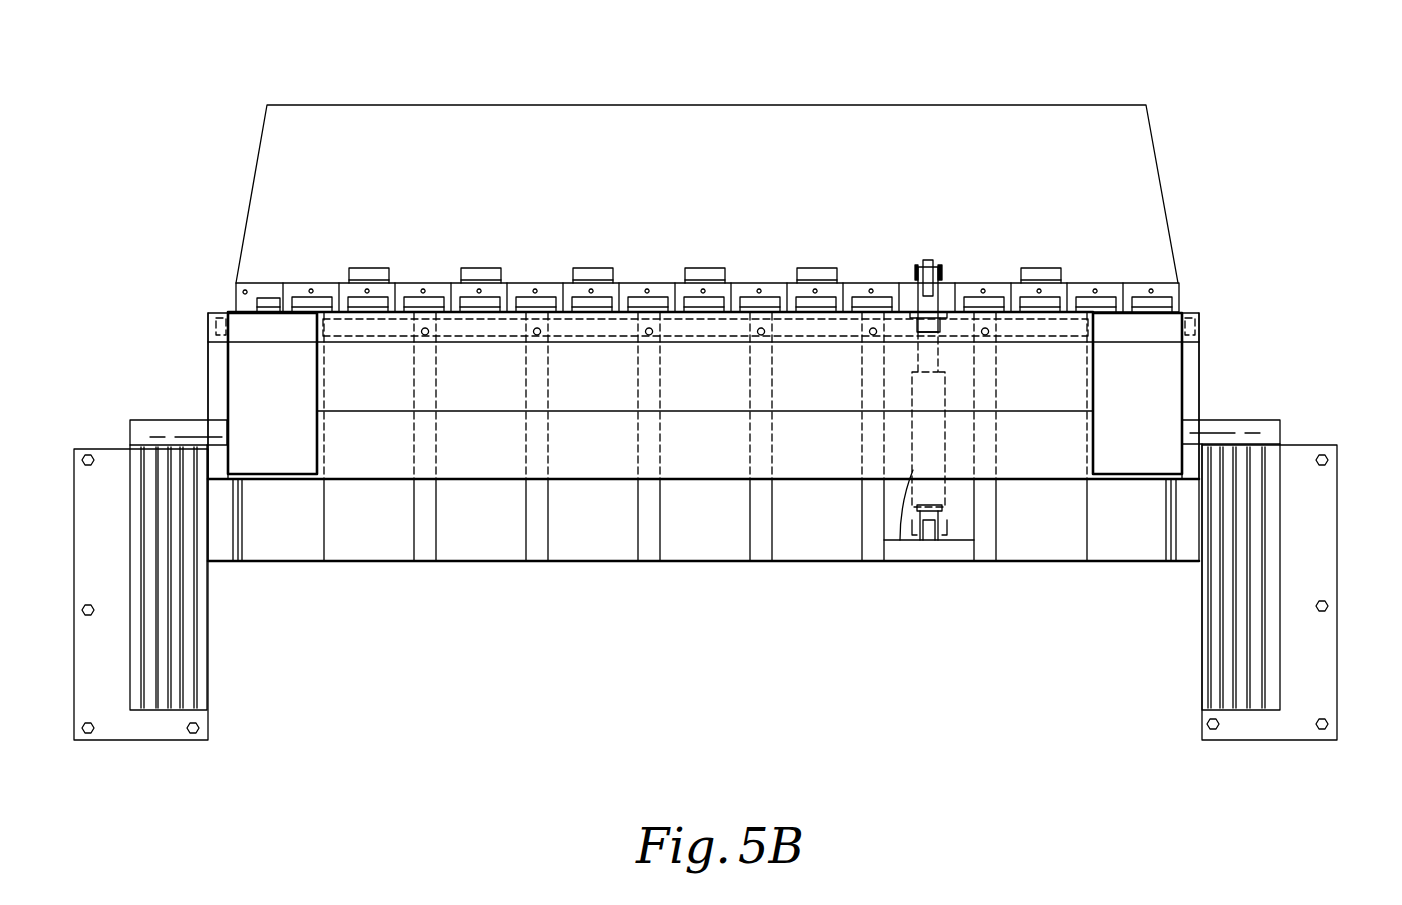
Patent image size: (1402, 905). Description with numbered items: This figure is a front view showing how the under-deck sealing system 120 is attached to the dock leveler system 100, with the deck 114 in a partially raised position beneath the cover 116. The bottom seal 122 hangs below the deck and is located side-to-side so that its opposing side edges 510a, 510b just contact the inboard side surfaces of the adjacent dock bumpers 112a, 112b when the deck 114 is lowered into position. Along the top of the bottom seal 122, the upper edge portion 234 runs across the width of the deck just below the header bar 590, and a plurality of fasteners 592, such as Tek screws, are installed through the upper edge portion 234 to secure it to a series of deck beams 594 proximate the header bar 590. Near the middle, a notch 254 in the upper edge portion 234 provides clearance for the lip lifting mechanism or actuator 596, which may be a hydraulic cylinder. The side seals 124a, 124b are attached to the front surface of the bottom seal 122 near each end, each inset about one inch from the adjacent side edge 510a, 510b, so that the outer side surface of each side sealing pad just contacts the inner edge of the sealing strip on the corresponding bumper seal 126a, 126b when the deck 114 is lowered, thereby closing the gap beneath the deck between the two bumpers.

The dock leveler system 100 is at (1024, 62).
The cover 116 is at (452, 104).
The header bar 590 is at (1045, 308).
The upper edge portion 234 is at (708, 327).
The fasteners 592 is at (646, 326).
The sealing system 120 is at (842, 585).
The deck 114 is at (1040, 493).
The bottom seal 122 is at (585, 482).
The deck beams 594 is at (750, 535).
The side edge 510a is at (208, 390).
The side edge 510b is at (1201, 387).
The side seal 124a is at (240, 358).
The side seal 124b is at (1170, 367).
The bumper seal 126a is at (162, 420).
The bumper seal 126b is at (1240, 417).
The dock bumper 112a is at (130, 665).
The dock bumper 112b is at (1280, 665).
The lip lifting mechanism or actuator 596 is at (920, 306).
The notch 254 is at (940, 270).